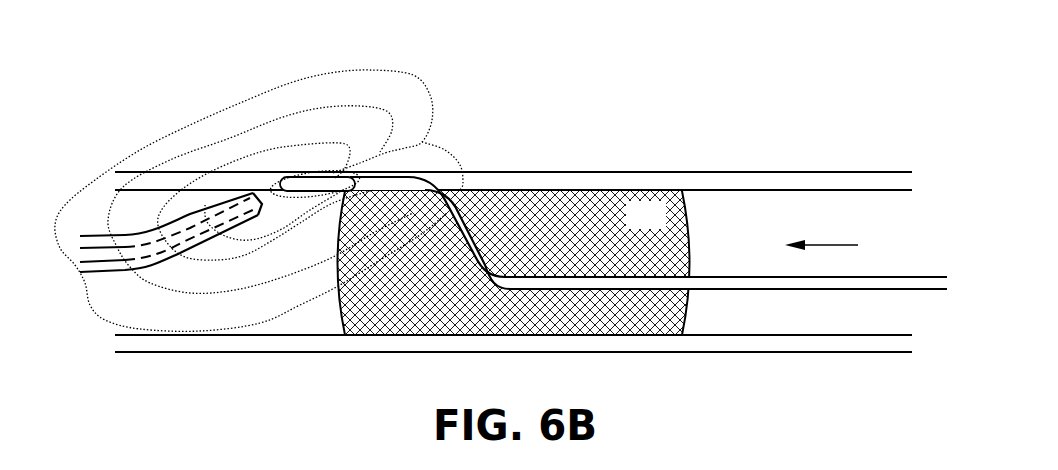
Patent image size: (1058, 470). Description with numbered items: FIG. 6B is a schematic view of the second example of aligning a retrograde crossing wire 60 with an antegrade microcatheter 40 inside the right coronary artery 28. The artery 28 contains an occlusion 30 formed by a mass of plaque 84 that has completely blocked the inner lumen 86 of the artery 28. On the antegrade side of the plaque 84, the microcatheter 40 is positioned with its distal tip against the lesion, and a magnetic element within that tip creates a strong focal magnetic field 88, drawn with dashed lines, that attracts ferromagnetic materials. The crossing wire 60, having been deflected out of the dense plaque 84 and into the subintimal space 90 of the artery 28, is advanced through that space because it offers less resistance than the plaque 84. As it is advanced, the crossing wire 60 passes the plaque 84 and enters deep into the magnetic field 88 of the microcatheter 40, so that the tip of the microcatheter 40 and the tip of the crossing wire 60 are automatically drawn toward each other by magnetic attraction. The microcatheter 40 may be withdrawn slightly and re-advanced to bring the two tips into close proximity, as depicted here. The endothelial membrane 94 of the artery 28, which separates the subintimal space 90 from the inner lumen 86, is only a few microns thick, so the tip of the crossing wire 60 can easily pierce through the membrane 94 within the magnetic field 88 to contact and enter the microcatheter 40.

The right coronary artery 28 is at (720, 172).
The occlusion 30 is at (597, 146).
The microcatheter 40 is at (97, 284).
The crossing wire 60 is at (907, 248).
The plaque 84 is at (633, 226).
The inner lumen 86 is at (799, 324).
The magnetic field 88 is at (423, 58).
The subintimal space 90 is at (269, 180).
The endothelial membrane 94 is at (270, 192).